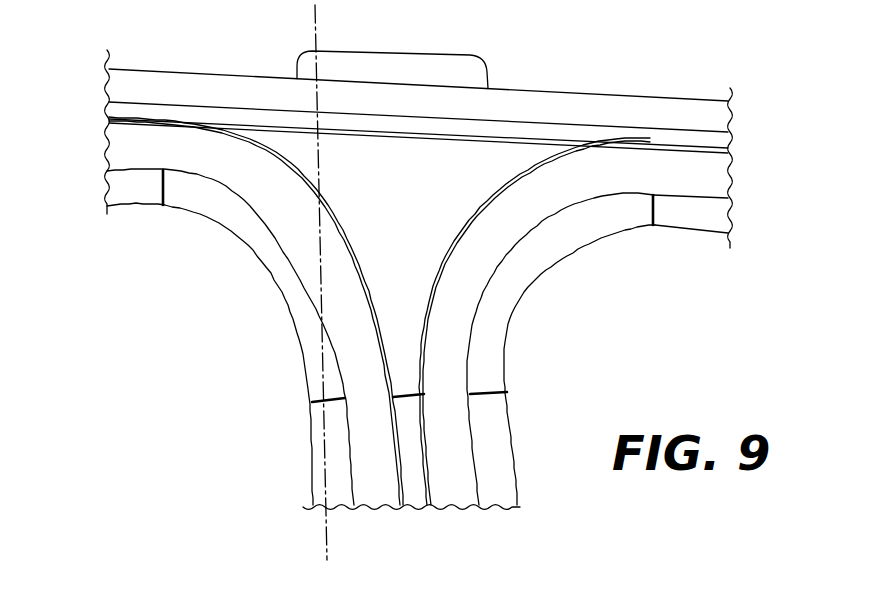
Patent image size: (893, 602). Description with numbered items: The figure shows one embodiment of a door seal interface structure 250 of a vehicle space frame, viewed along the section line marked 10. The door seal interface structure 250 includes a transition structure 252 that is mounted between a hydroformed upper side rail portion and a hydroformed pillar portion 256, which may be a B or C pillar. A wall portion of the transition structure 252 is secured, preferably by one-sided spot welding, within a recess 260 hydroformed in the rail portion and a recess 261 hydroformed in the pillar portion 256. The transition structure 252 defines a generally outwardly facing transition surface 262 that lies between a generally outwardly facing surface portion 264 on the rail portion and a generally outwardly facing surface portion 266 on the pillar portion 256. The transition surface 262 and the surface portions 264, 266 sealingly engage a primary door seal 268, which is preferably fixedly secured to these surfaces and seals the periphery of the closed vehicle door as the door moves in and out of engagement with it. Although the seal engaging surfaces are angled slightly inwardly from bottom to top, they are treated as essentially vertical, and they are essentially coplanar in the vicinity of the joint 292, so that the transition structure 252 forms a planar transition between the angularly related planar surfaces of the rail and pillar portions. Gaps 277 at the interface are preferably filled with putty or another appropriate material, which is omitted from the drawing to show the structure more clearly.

The section line 10- 10 is at (346, 26).
The door seal interface structure 250 is at (522, 160).
The transition structure 252 is at (413, 252).
The hydroformed pillar portion 256 is at (412, 487).
The recess 260 is at (505, 138).
The recess 261 is at (412, 396).
The transition surface 262 is at (402, 368).
The surface portion 264 is at (107, 180).
The surface portion 266 is at (342, 497).
The primary door seal 268 is at (333, 247).
The gaps 277 is at (163, 206).
The joint 292 is at (428, 75).